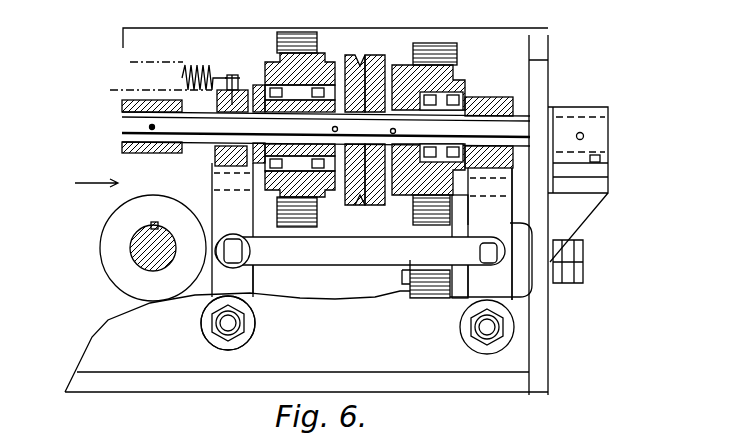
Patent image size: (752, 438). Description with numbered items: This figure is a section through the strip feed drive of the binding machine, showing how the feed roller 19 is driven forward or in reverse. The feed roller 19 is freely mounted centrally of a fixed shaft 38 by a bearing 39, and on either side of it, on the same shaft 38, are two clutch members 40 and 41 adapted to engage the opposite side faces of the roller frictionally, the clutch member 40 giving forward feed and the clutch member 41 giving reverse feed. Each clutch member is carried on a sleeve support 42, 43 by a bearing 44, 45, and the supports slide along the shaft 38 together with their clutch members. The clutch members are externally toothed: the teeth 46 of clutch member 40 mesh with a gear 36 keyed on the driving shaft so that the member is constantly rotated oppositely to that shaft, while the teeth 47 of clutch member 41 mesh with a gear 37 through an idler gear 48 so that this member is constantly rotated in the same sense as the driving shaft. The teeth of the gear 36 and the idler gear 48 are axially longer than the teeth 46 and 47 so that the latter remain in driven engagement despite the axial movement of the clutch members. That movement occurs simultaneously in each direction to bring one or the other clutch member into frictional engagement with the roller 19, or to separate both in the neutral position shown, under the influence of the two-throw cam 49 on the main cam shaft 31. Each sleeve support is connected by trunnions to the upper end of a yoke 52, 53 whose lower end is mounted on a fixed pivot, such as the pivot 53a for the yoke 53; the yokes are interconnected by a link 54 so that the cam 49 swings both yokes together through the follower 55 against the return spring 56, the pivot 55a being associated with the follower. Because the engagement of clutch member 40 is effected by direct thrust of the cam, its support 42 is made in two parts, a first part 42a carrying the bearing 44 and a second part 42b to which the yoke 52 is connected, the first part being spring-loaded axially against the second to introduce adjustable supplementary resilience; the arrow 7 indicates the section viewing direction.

The direction arrow 7 is at (93, 193).
The feed roller 19 is at (358, 58).
The main cam shaft 31 is at (140, 257).
The gear 36 is at (304, 34).
The gear 37 is at (427, 46).
The fixed shaft 38 is at (522, 130).
The bearing 39 is at (364, 108).
The clutch member 40 is at (281, 62).
The clutch member 41 is at (444, 62).
The sleeve support 42 is at (258, 81).
The first part of sleeve support 42a is at (283, 62).
The second part of sleeve support 42b is at (215, 154).
The sleeve support 43 is at (483, 96).
The bearing 44 is at (302, 180).
The bearing 45 is at (408, 200).
The teeth 46 is at (292, 208).
The teeth 47 is at (462, 228).
The idler gear 48 is at (410, 285).
The two-throw cam 49 is at (117, 241).
The yoke 52 is at (214, 203).
The yoke 53 is at (500, 210).
The fixed pivot 53a is at (487, 348).
The link 54 is at (320, 262).
The follower 55 is at (213, 288).
The bolt 55a is at (232, 344).
The return spring 56 is at (182, 72).